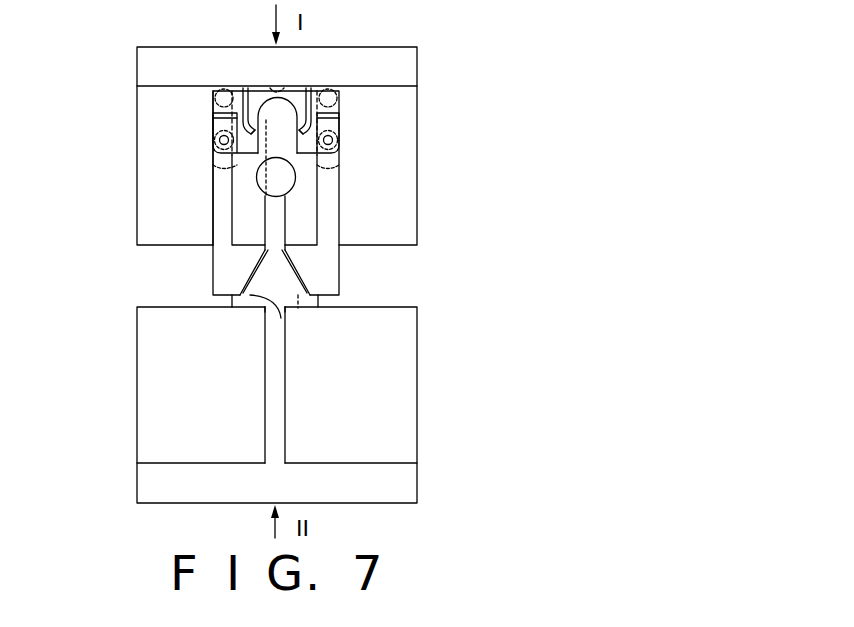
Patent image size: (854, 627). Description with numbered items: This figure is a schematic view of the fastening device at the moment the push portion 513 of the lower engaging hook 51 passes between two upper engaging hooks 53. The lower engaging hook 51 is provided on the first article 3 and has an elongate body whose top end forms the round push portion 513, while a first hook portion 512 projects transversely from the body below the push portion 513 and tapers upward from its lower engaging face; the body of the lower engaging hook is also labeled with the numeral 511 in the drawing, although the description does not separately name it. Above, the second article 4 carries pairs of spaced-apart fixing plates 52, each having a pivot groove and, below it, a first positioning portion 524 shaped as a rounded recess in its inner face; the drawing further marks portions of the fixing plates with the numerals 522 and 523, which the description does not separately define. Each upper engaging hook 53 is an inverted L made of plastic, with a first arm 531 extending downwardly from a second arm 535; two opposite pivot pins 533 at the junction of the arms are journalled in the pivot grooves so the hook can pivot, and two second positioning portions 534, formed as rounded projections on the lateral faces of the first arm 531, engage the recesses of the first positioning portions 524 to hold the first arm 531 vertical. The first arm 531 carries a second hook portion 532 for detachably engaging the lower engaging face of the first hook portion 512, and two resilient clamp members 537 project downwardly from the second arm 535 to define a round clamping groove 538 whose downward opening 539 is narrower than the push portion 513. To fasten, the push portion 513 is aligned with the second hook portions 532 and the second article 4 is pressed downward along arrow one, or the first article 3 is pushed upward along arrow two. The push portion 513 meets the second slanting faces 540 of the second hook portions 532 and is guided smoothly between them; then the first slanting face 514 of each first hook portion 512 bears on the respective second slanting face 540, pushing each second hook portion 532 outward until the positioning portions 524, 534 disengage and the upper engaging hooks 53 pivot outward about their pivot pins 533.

The first article 3 is at (371, 514).
The second article 4 is at (413, 43).
The lower engaging hook 51 is at (238, 385).
The channel 511 is at (272, 415).
The first hook portion 512 is at (287, 308).
The push portion 513 is at (273, 180).
The first slanting face 514 is at (243, 277).
The fixing plate 52 is at (215, 145).
The pin 522 is at (218, 118).
The spring 523 is at (215, 92).
The first positioning portion 524 is at (222, 178).
The upper engaging hook 53 is at (350, 224).
The first arm 531 is at (222, 189).
The second hook portion 532 is at (247, 254).
The pivot pin 533 is at (219, 90).
The second positioning portion 534 is at (212, 139).
The second arm 535 is at (281, 74).
The resilient clamp member 537 is at (243, 82).
The clamping groove 538 is at (268, 92).
The downward opening 539 is at (279, 128).
The second slanting face 540 is at (246, 296).